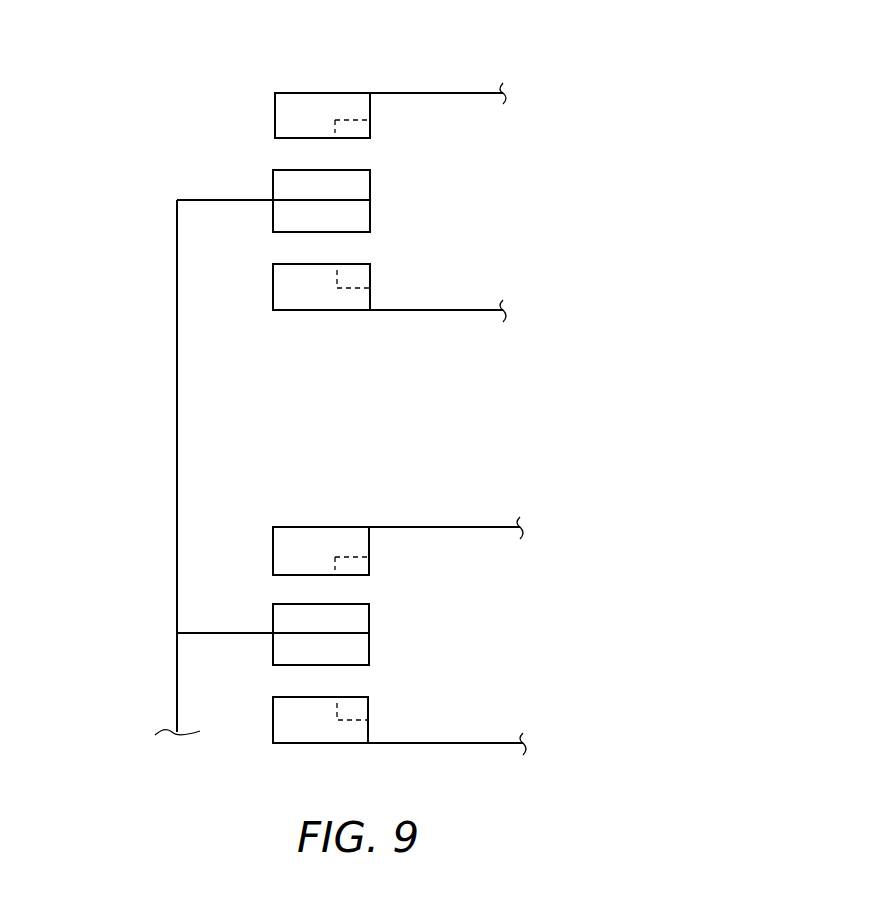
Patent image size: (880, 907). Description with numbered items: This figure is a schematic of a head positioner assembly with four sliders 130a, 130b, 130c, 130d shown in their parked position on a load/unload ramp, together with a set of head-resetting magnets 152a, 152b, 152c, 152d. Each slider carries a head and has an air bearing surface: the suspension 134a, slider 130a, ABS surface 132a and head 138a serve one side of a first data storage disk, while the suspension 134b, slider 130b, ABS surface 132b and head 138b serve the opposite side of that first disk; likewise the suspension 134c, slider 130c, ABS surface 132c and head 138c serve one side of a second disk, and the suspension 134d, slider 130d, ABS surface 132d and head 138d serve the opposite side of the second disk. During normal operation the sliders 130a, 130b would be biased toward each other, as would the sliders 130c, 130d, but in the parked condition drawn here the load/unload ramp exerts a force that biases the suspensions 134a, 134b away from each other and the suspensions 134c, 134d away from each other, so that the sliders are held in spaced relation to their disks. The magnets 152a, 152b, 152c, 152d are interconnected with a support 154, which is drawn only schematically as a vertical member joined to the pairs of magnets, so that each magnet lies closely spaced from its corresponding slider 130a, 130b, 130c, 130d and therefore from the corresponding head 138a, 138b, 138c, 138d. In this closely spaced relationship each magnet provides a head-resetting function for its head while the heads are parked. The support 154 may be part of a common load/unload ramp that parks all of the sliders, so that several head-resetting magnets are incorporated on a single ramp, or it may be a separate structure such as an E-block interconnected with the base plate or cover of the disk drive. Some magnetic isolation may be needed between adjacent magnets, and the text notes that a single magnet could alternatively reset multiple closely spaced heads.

The support 154 is at (177, 472).
The slider 130a is at (275, 100).
The slider 130b is at (273, 284).
The slider 130c is at (273, 527).
The slider 130d is at (273, 735).
The ABS surface 132a is at (295, 137).
The ABS surface 132b is at (295, 264).
The ABS surface 132c is at (292, 574).
The ABS surface 132d is at (297, 697).
The suspension 134a is at (430, 93).
The suspension 134b is at (443, 312).
The suspension 134c is at (428, 527).
The suspension 134d is at (445, 745).
The head 138a is at (360, 128).
The head 138b is at (352, 277).
The head 138c is at (360, 563).
The head 138d is at (355, 707).
The magnet 152a is at (373, 185).
The magnet 152b is at (373, 220).
The magnet 152c is at (370, 617).
The magnet 152d is at (370, 652).